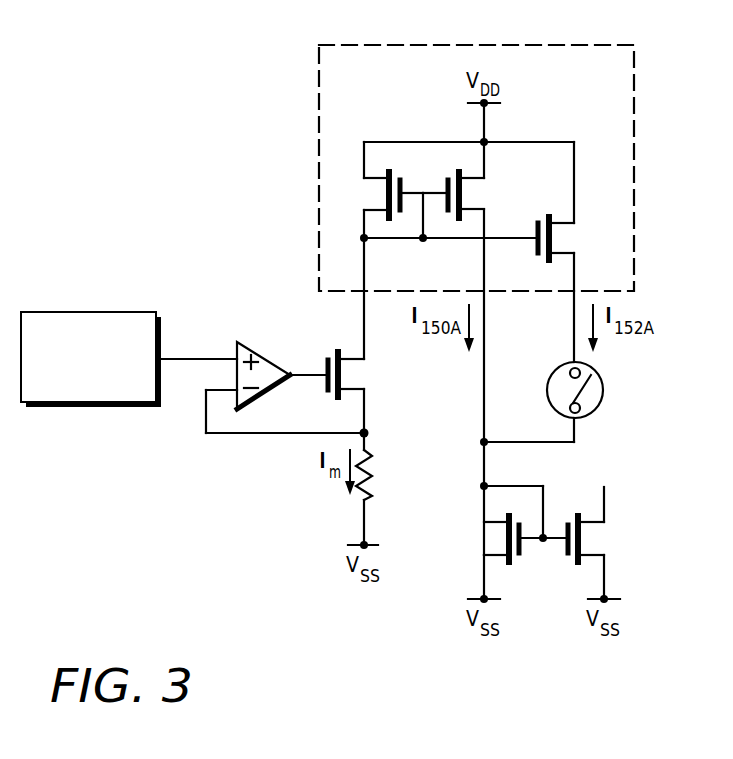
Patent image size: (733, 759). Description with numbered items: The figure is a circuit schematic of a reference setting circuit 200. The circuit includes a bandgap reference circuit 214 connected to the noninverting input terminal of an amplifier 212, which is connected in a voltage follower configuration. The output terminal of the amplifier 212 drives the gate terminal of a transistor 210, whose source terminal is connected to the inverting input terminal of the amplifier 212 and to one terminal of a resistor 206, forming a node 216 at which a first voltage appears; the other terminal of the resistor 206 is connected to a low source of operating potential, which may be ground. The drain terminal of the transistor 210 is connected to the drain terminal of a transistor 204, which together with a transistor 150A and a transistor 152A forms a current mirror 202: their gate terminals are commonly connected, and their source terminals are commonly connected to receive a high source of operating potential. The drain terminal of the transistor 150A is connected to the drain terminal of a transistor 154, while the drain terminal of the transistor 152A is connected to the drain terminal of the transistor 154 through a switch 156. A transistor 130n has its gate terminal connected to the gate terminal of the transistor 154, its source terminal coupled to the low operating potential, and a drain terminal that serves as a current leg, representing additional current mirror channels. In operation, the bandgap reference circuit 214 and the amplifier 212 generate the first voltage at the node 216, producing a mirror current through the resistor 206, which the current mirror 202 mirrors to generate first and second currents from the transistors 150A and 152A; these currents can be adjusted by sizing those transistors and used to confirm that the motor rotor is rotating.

The reference setting circuit 200 is at (195, 609).
The current mirror 202 is at (634, 128).
The transistor 204 is at (372, 193).
The transistor 150A is at (478, 193).
The transistor 152A is at (563, 237).
The bandgap reference circuit 214 is at (120, 312).
The amplifier 212 is at (262, 350).
The transistor 210 is at (357, 373).
The node 216 is at (366, 432).
The resistor 206 is at (374, 484).
The switch 156 is at (603, 393).
The transistor 154 is at (493, 538).
The transistor 130n is at (598, 538).